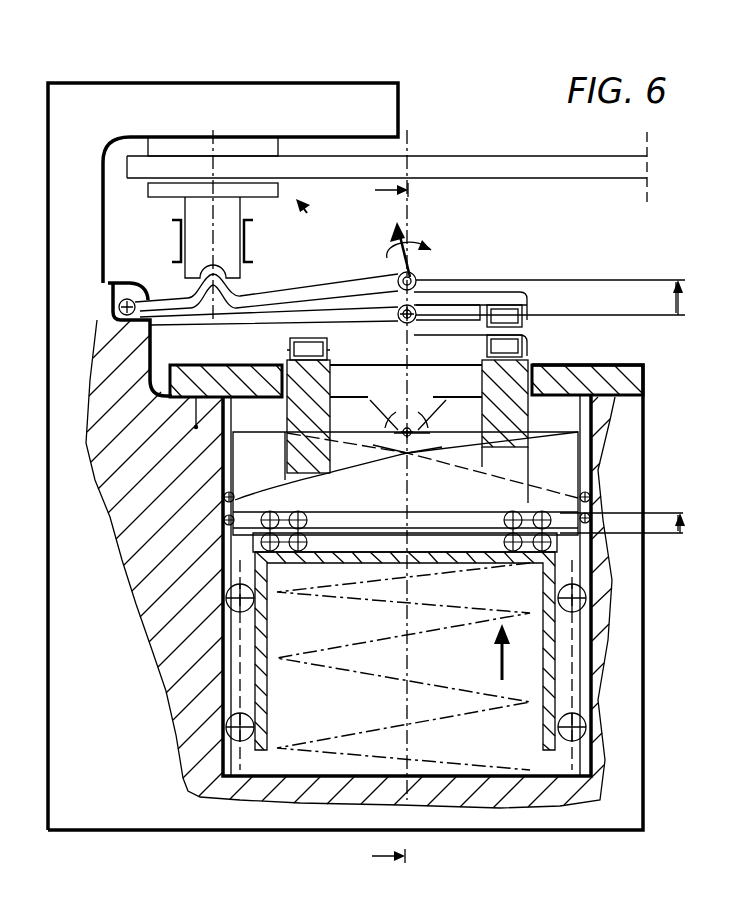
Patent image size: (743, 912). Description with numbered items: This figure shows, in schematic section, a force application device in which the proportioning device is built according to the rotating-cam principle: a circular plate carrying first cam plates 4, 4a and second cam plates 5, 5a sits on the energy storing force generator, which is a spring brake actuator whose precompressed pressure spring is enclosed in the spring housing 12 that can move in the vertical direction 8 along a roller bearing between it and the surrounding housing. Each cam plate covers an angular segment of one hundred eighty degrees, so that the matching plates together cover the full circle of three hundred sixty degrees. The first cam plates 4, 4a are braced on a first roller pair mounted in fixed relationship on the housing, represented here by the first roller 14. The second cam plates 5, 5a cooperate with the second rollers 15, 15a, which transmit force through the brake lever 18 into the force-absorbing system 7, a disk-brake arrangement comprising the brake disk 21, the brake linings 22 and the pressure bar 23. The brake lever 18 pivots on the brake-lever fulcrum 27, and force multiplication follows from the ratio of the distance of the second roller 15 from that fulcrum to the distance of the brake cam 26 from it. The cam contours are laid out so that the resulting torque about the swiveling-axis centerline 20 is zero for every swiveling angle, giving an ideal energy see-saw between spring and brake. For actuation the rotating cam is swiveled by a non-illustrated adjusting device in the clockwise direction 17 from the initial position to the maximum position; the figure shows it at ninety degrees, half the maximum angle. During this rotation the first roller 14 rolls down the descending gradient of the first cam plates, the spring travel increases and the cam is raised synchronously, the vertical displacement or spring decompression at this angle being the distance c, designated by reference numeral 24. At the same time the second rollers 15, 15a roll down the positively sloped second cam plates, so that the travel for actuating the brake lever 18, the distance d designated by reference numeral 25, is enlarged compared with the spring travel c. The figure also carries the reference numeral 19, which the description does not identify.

The first cam plate 4 is at (542, 433).
The first cam plate 4a is at (275, 432).
The second cam plate 5 is at (338, 348).
The second cam plate 5a is at (427, 398).
The force-absorbing system 7 is at (352, 527).
The vertical direction 8 is at (500, 642).
The spring housing 12 is at (598, 672).
The first roller 14 is at (420, 432).
The second roller 15 is at (290, 349).
The second roller 15a is at (525, 344).
The clockwise direction 17 is at (440, 264).
The brake lever 18 is at (310, 308).
The force arrow 19 is at (406, 227).
The swiveling-axis centerline 20 is at (405, 790).
The brake disk 21 is at (482, 161).
The brake linings 22 is at (253, 193).
The pressure bar 23 is at (186, 214).
The distance c 24 is at (678, 535).
The distance d 25 is at (677, 310).
The brake cam 26 is at (233, 290).
The brake-lever fulcrum 27 is at (123, 294).
The distance d is at (559, 321).
The distance c is at (633, 550).